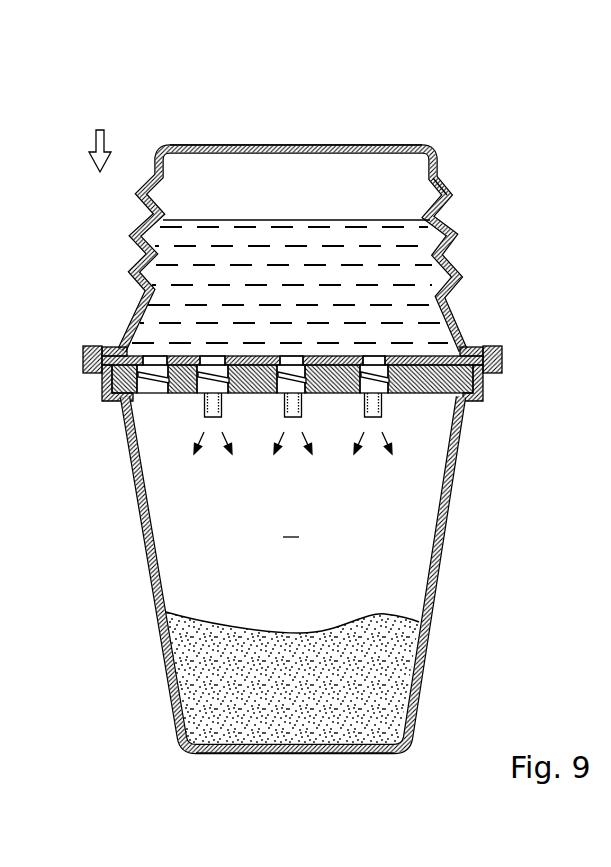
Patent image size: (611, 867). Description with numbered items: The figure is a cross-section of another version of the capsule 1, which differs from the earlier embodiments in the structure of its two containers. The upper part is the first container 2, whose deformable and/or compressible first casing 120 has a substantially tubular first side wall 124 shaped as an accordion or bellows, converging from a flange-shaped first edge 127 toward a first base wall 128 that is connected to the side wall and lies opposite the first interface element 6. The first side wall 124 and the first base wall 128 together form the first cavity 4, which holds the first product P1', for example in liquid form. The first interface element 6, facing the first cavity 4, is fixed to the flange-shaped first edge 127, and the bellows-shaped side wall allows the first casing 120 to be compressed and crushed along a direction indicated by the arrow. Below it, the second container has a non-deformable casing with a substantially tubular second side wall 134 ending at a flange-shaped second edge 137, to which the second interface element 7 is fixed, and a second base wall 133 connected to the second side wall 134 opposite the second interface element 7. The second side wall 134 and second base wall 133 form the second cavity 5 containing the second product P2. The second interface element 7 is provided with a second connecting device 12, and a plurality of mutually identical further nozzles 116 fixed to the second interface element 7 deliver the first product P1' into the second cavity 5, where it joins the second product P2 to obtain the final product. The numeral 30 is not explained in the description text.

The capsule 1 is at (492, 123).
The first container 2 is at (186, 121).
The first cavity 4 is at (233, 197).
The second cavity 5 is at (299, 537).
The first interface element 6 is at (187, 356).
The second interface element 7 is at (437, 393).
The second connecting device 12 is at (196, 390).
The cup body 30 is at (461, 604).
The further nozzles 116 is at (200, 412).
The first casing 120 is at (483, 238).
The first side wall 124 is at (428, 205).
The first edge 127 is at (503, 362).
The first base wall 128 is at (247, 147).
The second base wall 133 is at (246, 752).
The second side wall 134 is at (162, 648).
The second edge 137 is at (487, 392).
The first product P1' is at (252, 395).
The second product P2 is at (215, 624).